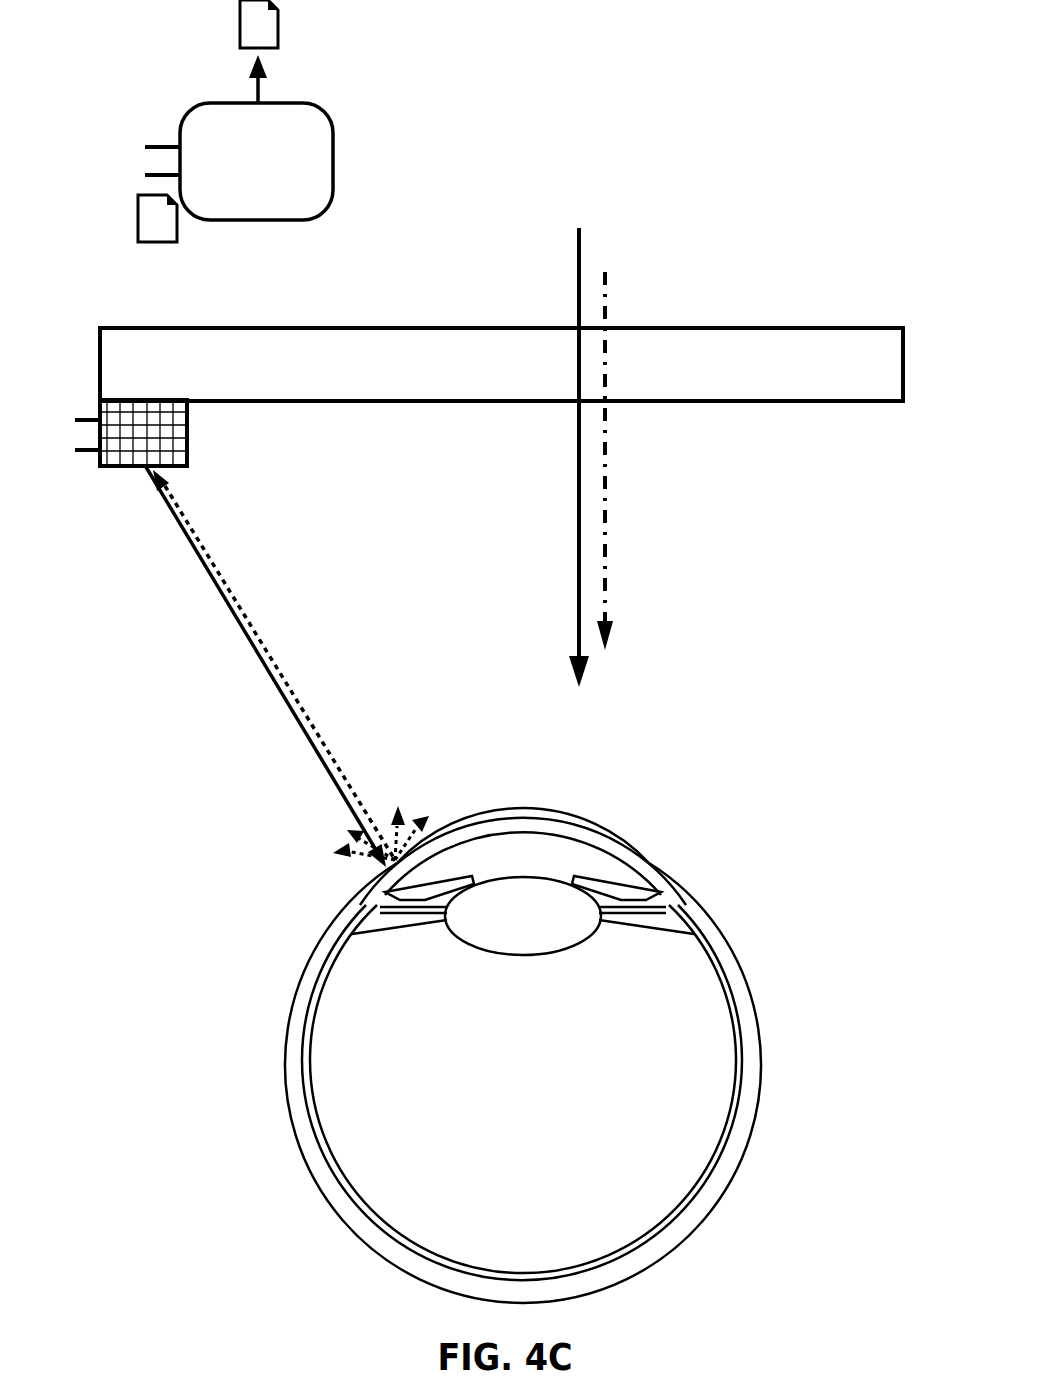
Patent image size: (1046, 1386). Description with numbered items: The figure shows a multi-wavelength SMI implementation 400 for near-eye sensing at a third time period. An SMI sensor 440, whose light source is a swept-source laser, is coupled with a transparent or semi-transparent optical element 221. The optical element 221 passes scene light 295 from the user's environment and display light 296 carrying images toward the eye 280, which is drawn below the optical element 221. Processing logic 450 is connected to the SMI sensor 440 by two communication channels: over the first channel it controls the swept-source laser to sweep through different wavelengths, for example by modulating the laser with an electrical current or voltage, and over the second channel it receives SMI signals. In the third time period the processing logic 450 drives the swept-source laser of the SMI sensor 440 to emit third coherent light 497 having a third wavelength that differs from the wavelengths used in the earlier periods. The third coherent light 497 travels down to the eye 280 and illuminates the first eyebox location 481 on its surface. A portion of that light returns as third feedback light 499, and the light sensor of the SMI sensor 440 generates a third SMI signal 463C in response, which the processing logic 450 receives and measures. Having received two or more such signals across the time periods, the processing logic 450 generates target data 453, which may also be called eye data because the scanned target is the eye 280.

The multi-wavelength SMI implementation 400 is at (503, 651).
The target data 453 is at (278, 35).
The processing logic 450 is at (226, 137).
The third SMI signal 463C is at (138, 218).
The optical element 221 is at (501, 364).
The scene light 295 is at (578, 443).
The display light 296 is at (607, 445).
The SMI sensor 440 is at (187, 440).
The third coherent light 497 is at (277, 687).
The third feedback light 499 is at (242, 605).
The first eyebox location 481 is at (393, 870).
The eye 280 is at (523, 1055).